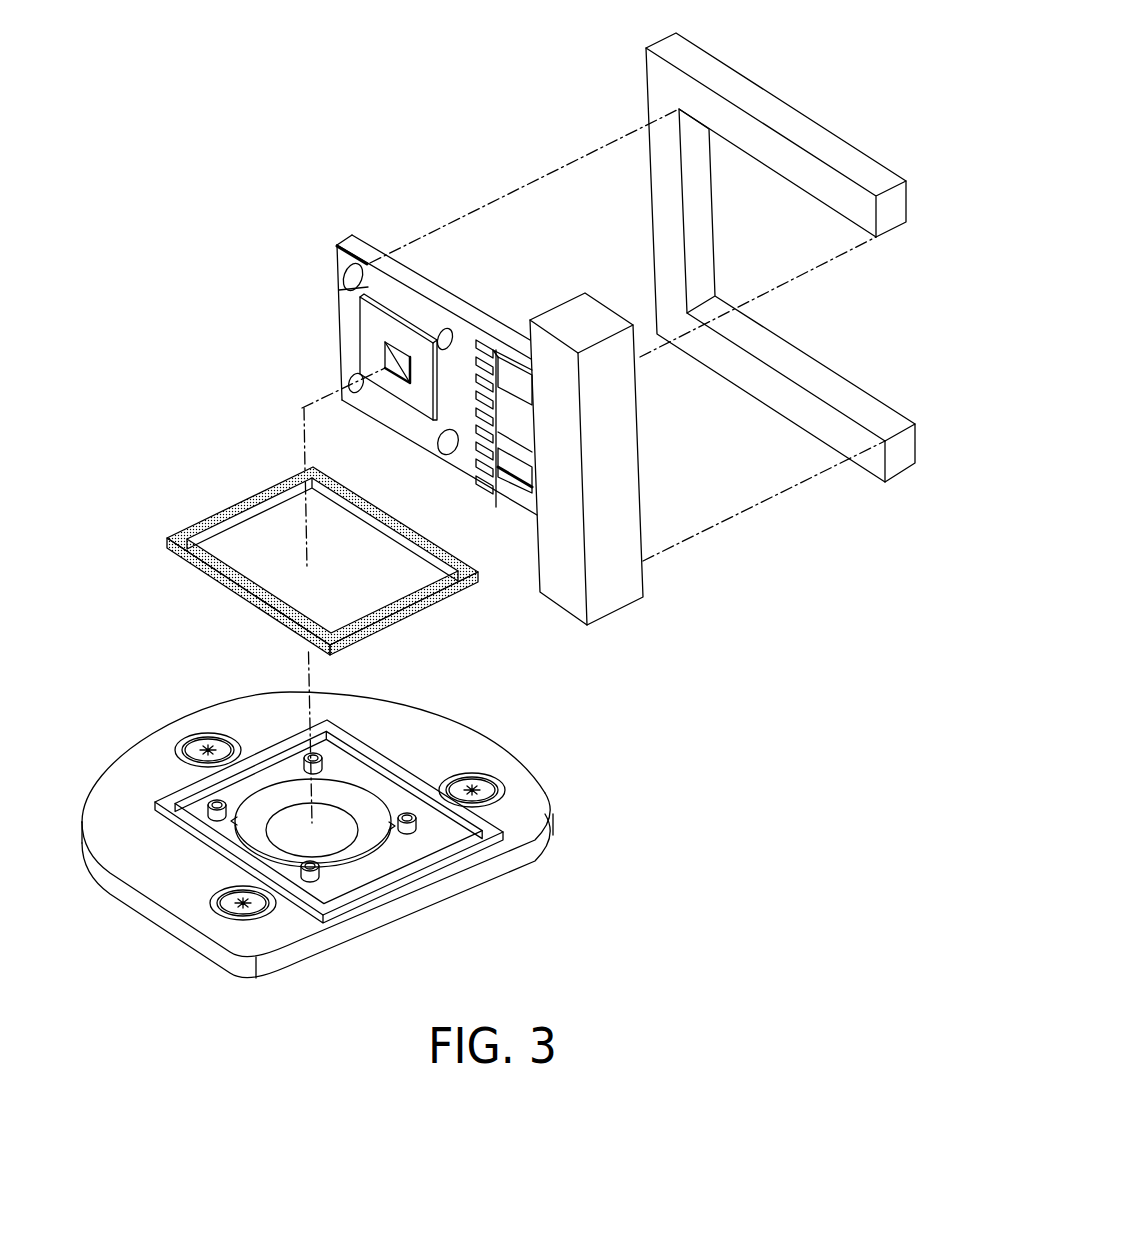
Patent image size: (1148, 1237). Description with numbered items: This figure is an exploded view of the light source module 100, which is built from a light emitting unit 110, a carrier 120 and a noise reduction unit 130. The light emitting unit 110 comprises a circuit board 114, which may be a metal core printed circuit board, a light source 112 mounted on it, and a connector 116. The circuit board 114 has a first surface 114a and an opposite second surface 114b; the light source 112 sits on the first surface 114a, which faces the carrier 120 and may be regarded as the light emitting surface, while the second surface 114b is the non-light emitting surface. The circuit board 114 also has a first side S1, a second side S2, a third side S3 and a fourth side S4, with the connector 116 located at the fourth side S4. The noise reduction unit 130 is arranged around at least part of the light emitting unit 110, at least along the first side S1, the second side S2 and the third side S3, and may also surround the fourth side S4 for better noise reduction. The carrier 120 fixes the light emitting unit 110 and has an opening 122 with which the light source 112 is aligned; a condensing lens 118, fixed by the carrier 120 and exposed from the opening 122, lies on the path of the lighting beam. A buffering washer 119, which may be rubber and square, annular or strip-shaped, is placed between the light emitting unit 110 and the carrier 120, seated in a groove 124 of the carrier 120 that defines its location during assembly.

The light source module 100 is at (152, 16).
The light emitting unit 110 is at (288, 16).
The light source 112 is at (405, 358).
The circuit board 114 is at (417, 307).
The first surface 114a is at (343, 314).
The second surface 114b is at (368, 244).
The connector 116 is at (570, 310).
The condensing lens 118 is at (330, 823).
The buffering washer 119 is at (222, 514).
The carrier 120 is at (177, 877).
The opening 122 is at (275, 781).
The groove 124 is at (412, 792).
The noise reduction unit 130 is at (778, 117).
The first side S1 is at (392, 430).
The second side S2 is at (339, 352).
The third side S3 is at (397, 277).
The fourth side S4 is at (527, 443).